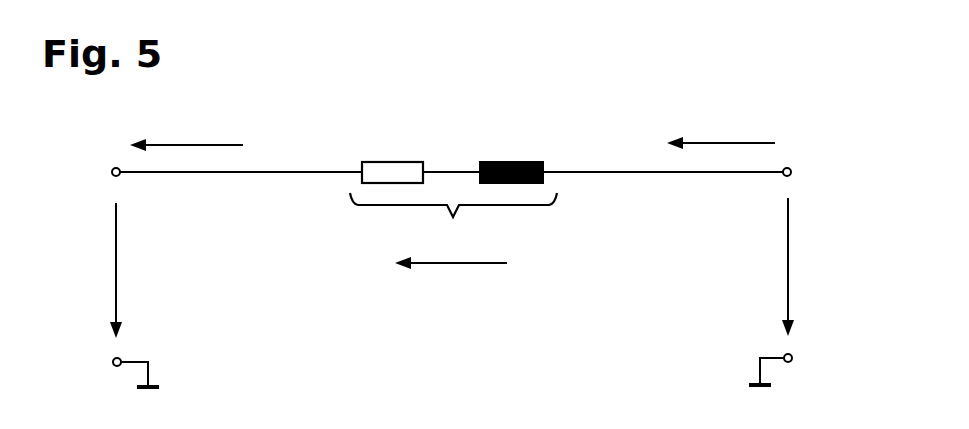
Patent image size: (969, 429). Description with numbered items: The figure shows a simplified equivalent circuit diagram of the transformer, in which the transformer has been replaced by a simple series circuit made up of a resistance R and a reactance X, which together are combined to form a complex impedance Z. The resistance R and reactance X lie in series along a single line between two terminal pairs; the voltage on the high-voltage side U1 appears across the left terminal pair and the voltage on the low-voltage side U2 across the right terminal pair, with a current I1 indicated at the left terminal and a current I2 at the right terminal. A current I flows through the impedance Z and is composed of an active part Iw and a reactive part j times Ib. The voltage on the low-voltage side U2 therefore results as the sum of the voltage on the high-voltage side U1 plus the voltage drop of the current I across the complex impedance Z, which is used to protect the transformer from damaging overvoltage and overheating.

The resistance R is at (392, 158).
The reactance X is at (511, 158).
The complex impedance Z is at (453, 219).
The current on the high-voltage side I1 is at (182, 119).
The current on the low-voltage side I2 is at (714, 117).
The voltage on the high-voltage side U1 is at (131, 270).
The voltage on the low-voltage side U2 is at (773, 267).
The current I is at (600, 256).